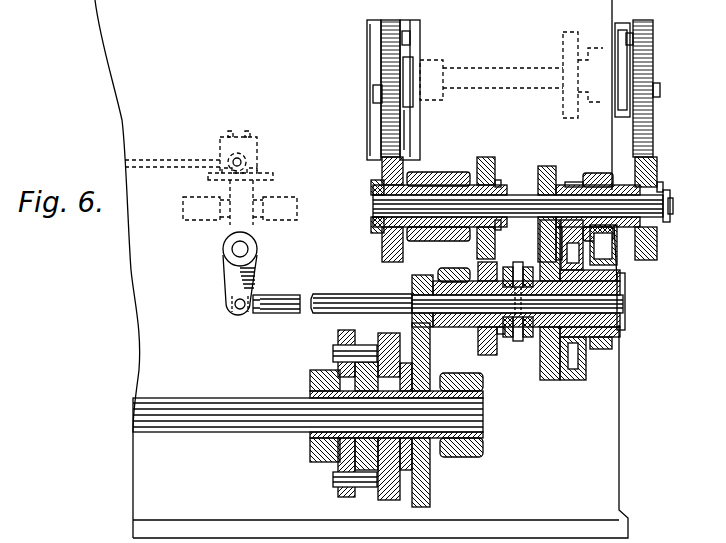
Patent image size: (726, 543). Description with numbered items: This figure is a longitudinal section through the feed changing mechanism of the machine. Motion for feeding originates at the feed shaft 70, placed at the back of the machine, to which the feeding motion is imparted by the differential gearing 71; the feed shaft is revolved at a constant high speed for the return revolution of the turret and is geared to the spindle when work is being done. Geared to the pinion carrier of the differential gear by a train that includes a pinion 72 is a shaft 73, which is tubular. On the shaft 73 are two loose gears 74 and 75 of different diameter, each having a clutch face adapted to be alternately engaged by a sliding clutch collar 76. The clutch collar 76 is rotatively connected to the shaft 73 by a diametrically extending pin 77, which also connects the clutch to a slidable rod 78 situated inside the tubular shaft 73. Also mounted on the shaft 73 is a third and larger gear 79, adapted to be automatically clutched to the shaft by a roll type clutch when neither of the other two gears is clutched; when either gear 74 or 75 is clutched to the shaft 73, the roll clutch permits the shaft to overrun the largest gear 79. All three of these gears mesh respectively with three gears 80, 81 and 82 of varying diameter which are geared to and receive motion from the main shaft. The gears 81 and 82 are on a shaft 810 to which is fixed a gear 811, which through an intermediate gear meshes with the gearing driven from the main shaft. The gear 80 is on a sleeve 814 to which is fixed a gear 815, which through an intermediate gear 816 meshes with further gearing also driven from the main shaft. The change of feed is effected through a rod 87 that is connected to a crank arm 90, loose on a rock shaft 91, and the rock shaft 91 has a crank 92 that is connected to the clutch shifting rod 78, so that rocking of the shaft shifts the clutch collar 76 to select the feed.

The feed shaft 70 is at (204, 424).
The differential gearing 71 is at (330, 468).
The pinion 72 is at (412, 285).
The shaft 73 is at (443, 274).
The loose gear 74 is at (480, 342).
The loose gear 75 is at (551, 356).
The sliding clutch collar 76 is at (509, 339).
The pin 77 is at (517, 269).
The slidable rod 78 is at (343, 303).
The third and larger gear 79 is at (577, 382).
The gear 80 is at (485, 166).
The gear 81 is at (546, 170).
The gear 82 is at (571, 183).
The rod 87 is at (147, 168).
The crank arm 90 is at (272, 183).
The rock shaft 91 is at (231, 251).
The crank 92 is at (232, 288).
The shaft 810 is at (653, 178).
The gear 811 is at (660, 242).
The sleeve 814 is at (436, 186).
The gear 815 is at (372, 180).
The intermediate gear 816 is at (368, 40).